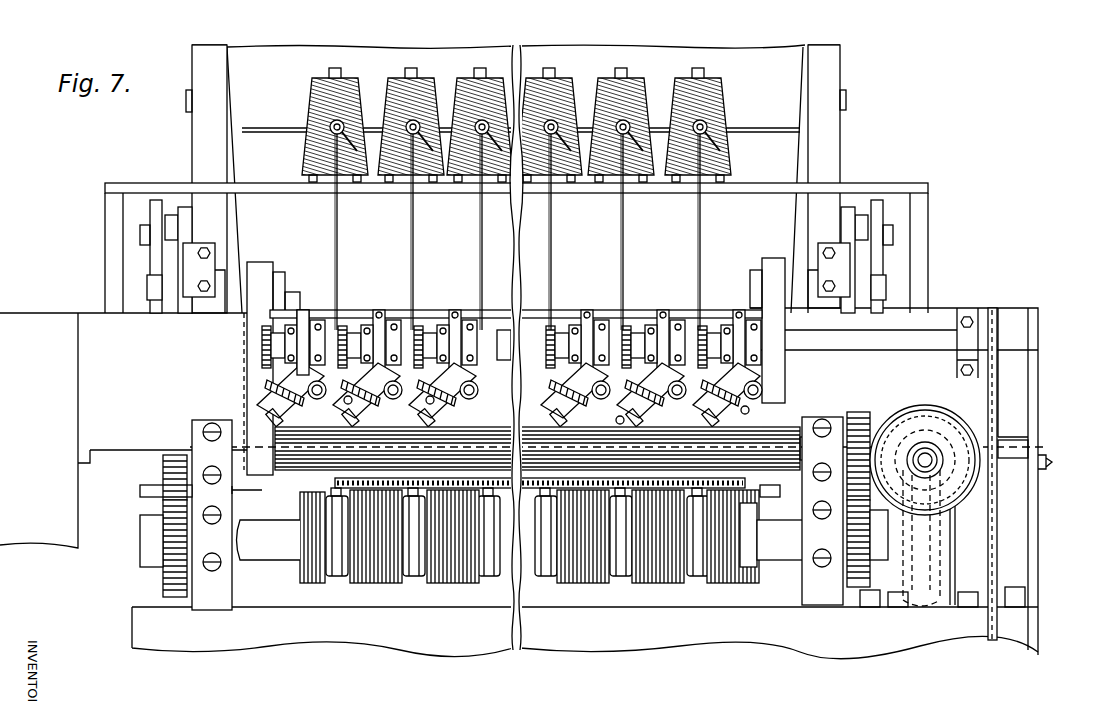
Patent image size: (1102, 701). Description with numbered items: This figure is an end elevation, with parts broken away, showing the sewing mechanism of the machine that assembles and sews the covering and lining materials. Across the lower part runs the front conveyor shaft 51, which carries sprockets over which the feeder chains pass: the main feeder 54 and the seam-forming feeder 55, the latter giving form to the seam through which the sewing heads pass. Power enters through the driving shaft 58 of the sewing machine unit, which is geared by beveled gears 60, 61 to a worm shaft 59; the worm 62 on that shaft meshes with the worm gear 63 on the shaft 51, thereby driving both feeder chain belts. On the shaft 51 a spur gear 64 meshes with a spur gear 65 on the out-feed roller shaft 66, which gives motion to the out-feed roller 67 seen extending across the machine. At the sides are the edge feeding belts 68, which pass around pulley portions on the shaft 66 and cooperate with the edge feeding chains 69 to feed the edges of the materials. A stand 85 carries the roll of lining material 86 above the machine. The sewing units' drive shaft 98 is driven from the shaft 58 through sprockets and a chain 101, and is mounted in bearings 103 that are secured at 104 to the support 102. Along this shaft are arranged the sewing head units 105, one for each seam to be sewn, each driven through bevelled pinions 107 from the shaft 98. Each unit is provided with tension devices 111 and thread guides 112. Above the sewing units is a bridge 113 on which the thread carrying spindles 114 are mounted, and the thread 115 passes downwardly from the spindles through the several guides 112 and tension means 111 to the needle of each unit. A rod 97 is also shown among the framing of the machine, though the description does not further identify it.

The front conveyor shaft 51 is at (278, 550).
The main feeder 54 is at (620, 585).
The seam-forming feeder 55 is at (312, 585).
The driving shaft 58 is at (1050, 470).
The worm shaft 59 is at (920, 455).
The beveled gear 60 is at (1002, 437).
The beveled gear 61 is at (965, 425).
The worm 62 is at (960, 500).
The worm gear 63 is at (925, 600).
The spur gear 64 is at (165, 570).
The spur gear 65 is at (165, 462).
The out-feed roller shaft 66 is at (805, 425).
The out-feed roller 67 is at (300, 432).
The edge feeding belts 68 is at (255, 355).
The edge feeding chains 69 is at (150, 490).
The stand 85 is at (200, 125).
The roll of lining material 86 is at (347, 48).
The guide rod 97 is at (150, 205).
The sewing units' drive shaft 98 is at (935, 345).
The chain 101 is at (997, 378).
The support 102 is at (90, 320).
The bearings 103 is at (457, 316).
The securing point 104 is at (380, 316).
The sewing head units 105 is at (554, 408).
The bevelled pinions 107 is at (505, 330).
The tension devices 111 is at (599, 412).
The thread guides 112 is at (448, 408).
The bridge 113 is at (516, 201).
The thread carrying spindles 114 is at (695, 68).
The thread 115 is at (428, 78).